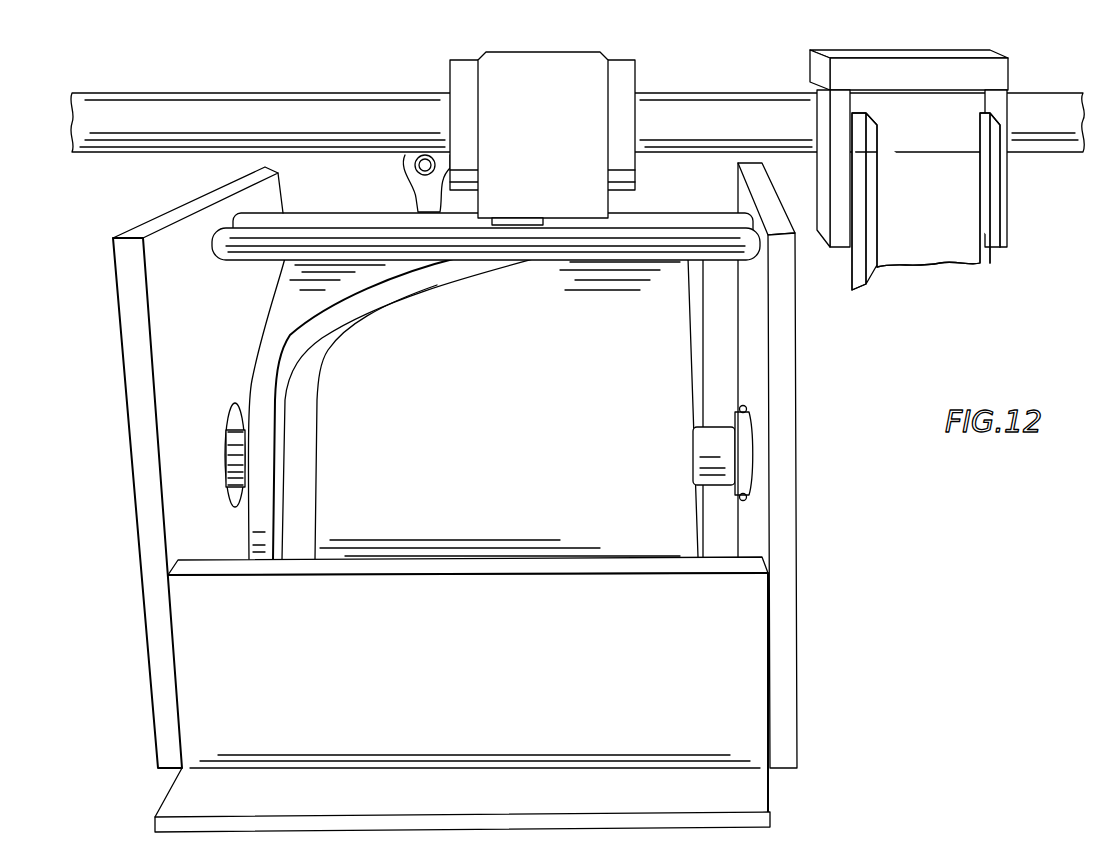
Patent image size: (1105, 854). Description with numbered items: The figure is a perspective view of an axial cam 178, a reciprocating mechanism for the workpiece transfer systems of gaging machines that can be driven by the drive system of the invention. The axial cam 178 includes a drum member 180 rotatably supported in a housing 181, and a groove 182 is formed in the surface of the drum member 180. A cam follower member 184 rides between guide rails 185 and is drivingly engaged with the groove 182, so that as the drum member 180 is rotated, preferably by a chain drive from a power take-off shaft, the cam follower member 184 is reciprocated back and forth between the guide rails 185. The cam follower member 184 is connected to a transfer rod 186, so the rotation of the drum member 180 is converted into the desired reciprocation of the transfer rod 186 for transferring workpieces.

The axial cam 178 is at (110, 200).
The drum member 180 is at (262, 354).
The housing 181 is at (138, 405).
The groove 182 is at (296, 460).
The cam follower member 184 is at (578, 73).
The guide rails 185 is at (348, 240).
The transfer rod 186 is at (388, 100).